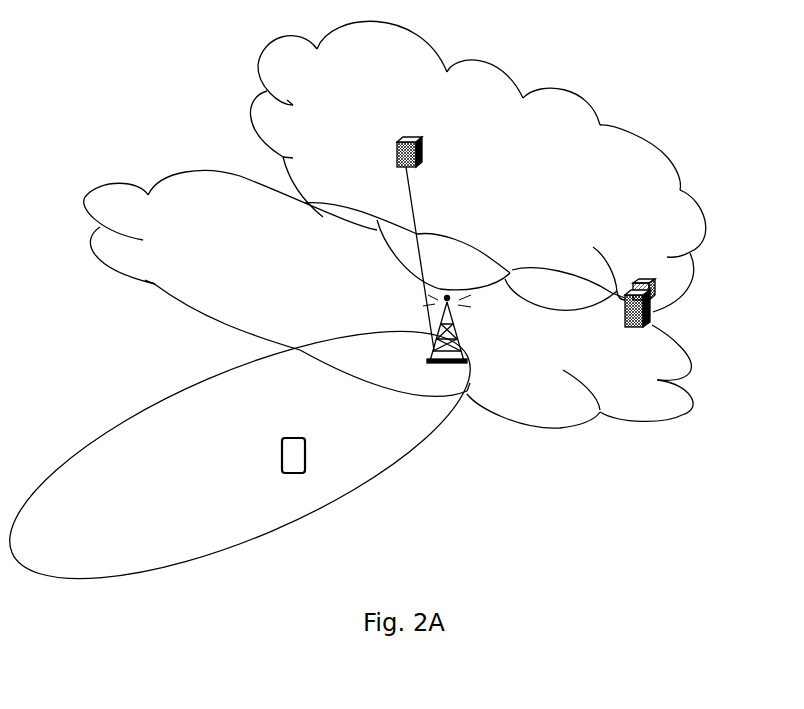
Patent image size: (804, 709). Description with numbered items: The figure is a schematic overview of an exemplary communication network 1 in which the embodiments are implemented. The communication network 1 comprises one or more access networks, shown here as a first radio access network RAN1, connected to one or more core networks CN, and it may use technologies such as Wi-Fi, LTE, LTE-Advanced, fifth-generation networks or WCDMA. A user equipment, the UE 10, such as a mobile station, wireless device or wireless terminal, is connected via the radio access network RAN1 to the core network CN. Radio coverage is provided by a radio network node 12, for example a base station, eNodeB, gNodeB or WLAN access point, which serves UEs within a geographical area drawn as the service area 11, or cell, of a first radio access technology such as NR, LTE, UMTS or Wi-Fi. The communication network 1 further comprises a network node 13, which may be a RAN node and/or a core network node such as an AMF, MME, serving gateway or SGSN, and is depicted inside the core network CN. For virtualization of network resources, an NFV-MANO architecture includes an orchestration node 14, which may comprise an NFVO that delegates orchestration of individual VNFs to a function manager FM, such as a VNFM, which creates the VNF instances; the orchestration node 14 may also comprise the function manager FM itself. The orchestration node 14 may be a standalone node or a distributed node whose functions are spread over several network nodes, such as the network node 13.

The communication network 1 is at (171, 83).
The UE 10 is at (298, 445).
The service area 11 is at (140, 517).
The radio network node 12 is at (458, 337).
The network node 13 is at (413, 137).
The orchestration node 14 is at (637, 280).
The core network CN is at (365, 87).
The first RAN RAN1 is at (256, 229).
The function manager FM is at (655, 312).